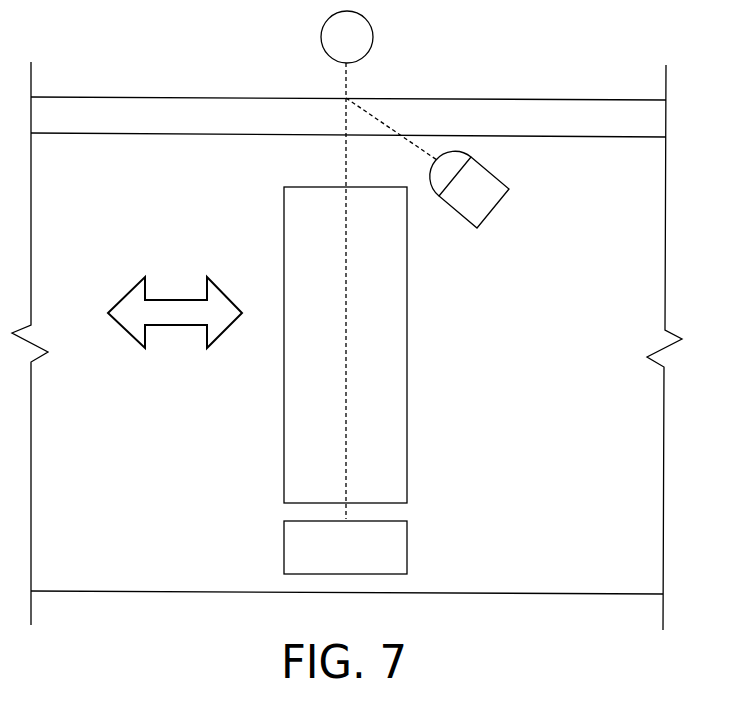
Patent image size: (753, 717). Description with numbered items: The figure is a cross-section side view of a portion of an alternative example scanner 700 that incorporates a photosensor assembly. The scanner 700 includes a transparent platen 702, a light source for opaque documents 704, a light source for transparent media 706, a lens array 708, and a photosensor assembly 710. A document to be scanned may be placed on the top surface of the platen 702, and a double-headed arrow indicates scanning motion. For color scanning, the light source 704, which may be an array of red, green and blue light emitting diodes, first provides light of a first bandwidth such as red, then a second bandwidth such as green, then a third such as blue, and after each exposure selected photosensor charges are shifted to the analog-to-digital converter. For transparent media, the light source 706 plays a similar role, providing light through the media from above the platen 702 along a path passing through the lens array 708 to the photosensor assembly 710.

The scanner 700 is at (175, 518).
The transparent platen 702 is at (562, 100).
The light source for opaque documents 704 is at (490, 178).
The light source for transparent media 706 is at (372, 40).
The lens array 708 is at (408, 443).
The photosensor assembly 710 is at (408, 521).